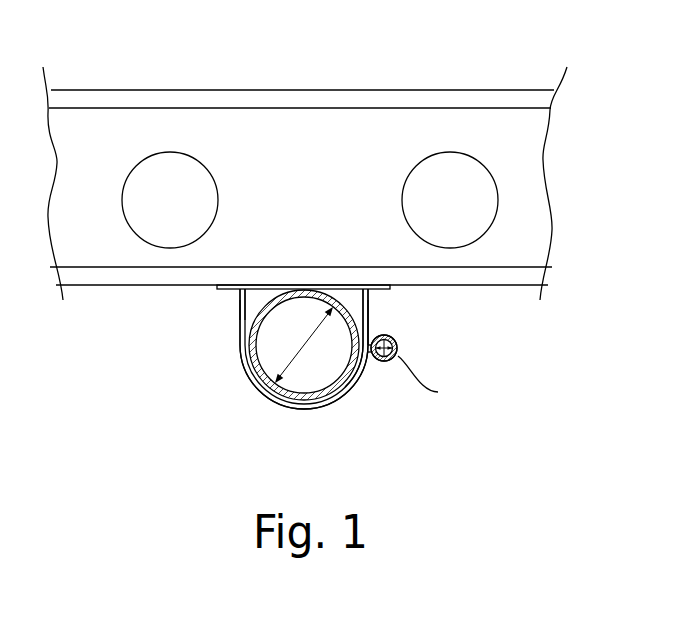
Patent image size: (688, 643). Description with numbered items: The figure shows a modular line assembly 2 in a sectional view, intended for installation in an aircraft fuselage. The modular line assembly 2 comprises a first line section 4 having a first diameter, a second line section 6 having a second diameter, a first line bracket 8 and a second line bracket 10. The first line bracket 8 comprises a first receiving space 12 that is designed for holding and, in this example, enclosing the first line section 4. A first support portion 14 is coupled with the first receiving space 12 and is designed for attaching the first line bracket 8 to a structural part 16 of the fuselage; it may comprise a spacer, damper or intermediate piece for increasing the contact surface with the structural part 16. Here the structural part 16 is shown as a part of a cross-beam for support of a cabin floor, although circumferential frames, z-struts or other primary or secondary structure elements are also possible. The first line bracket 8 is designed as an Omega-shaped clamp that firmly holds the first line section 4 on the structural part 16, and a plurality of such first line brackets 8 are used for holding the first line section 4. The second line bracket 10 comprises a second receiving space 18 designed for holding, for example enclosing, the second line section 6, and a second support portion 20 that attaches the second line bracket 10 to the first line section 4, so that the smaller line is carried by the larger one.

The modular line assembly 2 is at (470, 368).
The first line section 4 is at (256, 343).
The second line section 6 is at (398, 345).
The first line bracket 8 is at (240, 302).
The second line bracket 10 is at (377, 372).
The first receiving space 12 is at (347, 302).
The first support portion 14 is at (221, 298).
The structural part 16 is at (170, 100).
The second receiving space 18 is at (400, 333).
The second support portion 20 is at (363, 380).